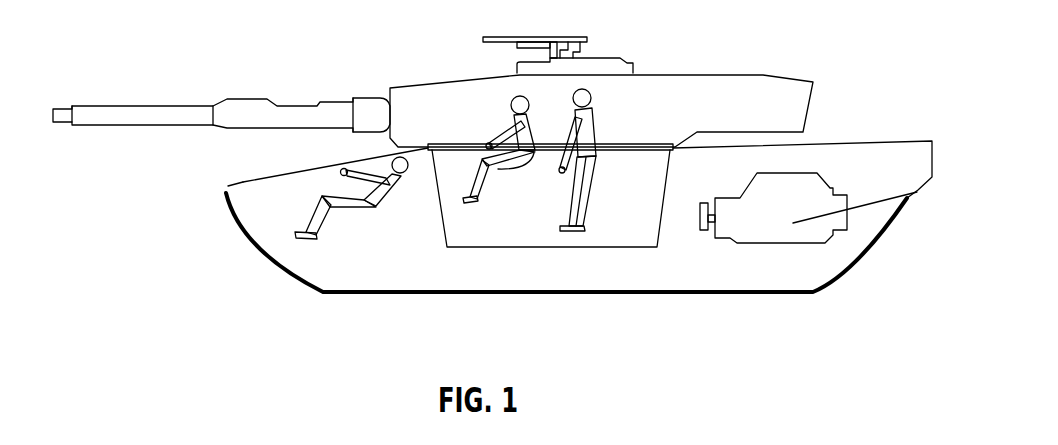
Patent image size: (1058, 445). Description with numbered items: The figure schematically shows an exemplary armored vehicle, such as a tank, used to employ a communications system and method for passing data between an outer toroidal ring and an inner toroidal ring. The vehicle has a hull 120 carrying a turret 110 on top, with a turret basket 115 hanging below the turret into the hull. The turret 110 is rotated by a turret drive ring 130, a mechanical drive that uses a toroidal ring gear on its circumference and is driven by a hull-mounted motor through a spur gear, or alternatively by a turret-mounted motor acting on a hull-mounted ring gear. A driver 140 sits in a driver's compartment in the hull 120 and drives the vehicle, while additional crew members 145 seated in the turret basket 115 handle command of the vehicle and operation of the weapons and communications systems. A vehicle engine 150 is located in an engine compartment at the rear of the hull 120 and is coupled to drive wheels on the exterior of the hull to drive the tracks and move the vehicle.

The turret 110 is at (713, 73).
The hull 120 is at (847, 138).
The turret drive ring 130 is at (602, 152).
The turret basket 115 is at (583, 247).
The driver 140 is at (368, 208).
The crew members 145 is at (485, 147).
The vehicle engine 150 is at (787, 243).